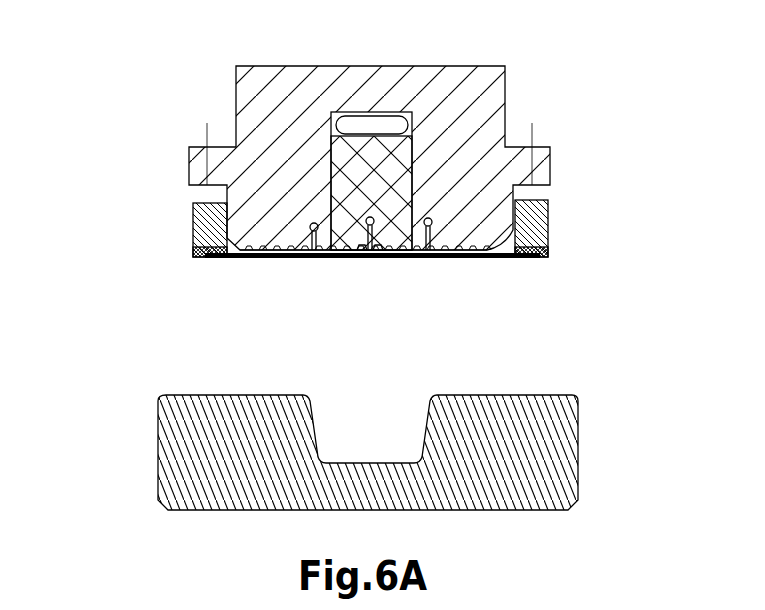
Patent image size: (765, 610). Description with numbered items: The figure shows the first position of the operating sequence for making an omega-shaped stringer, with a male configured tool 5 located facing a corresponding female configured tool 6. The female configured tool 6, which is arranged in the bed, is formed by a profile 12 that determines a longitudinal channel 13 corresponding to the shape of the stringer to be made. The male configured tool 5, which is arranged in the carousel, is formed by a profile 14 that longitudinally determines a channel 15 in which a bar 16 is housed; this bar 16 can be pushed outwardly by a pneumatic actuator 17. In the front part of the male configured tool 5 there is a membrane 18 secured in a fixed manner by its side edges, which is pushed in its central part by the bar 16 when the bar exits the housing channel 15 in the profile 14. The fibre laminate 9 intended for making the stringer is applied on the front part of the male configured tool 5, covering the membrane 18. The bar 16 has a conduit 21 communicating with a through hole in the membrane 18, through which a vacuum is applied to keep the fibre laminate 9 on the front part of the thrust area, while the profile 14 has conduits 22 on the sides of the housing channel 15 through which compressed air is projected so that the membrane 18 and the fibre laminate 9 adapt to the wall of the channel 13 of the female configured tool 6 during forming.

The male configured tool 5 is at (364, 166).
The female configured tool 6 is at (359, 418).
The fibre laminate 9 is at (272, 257).
The profile 12 is at (530, 452).
The longitudinal channel 13 is at (372, 447).
The profile 14 is at (292, 133).
The channel 15 is at (331, 175).
The bar 16 is at (487, 125).
The pneumatic actuator 17 is at (373, 121).
The membrane 18 is at (518, 248).
The conduit 21 is at (366, 221).
The conduits 22 is at (311, 228).